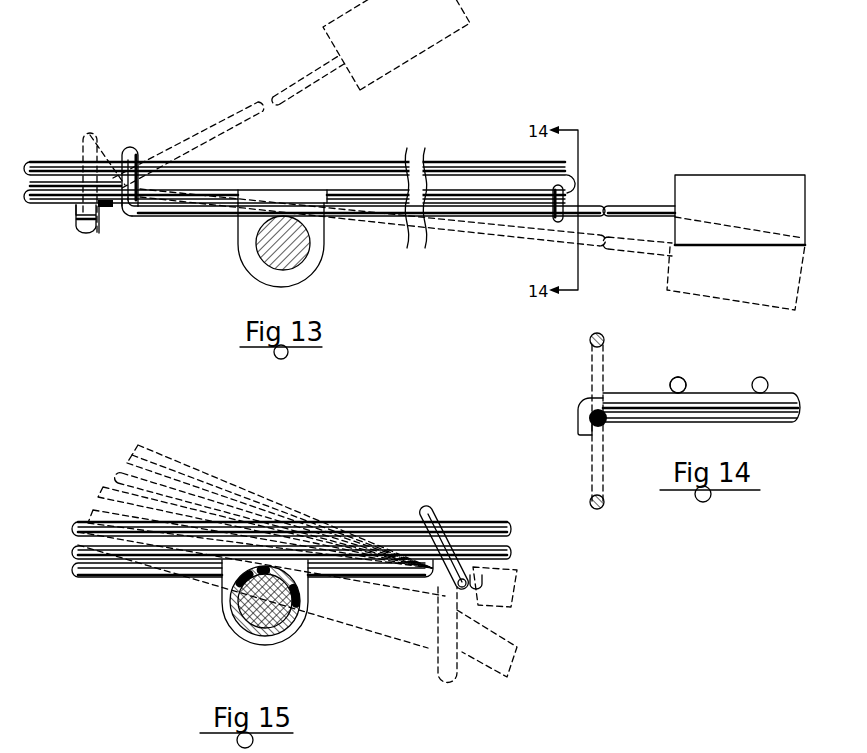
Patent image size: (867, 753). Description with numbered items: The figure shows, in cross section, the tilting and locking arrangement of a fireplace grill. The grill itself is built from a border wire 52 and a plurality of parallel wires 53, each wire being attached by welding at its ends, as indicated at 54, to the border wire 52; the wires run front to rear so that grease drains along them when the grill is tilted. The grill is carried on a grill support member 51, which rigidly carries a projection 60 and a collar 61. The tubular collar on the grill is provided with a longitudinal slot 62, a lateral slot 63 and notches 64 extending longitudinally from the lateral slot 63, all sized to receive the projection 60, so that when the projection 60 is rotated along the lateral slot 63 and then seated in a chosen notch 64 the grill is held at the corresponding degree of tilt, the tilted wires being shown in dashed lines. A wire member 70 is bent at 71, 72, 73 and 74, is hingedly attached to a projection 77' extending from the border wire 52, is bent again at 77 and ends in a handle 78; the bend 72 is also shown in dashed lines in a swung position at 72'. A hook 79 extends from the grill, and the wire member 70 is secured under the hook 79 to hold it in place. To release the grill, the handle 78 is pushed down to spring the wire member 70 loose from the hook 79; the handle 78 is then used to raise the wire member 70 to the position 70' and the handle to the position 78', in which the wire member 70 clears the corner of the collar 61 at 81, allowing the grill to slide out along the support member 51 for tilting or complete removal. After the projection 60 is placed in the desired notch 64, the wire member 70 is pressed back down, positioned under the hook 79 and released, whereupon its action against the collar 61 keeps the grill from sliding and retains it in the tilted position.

In FIG. 13, the grill support member 51 is at (309, 250).
In FIG. 15, the grill support member 51 is at (237, 618).
In FIG. 13, the border wire 52 is at (294, 173).
In FIG. 14, the border wire 52 is at (703, 396).
In FIG. 15, the border wire 52 is at (291, 528).
In FIG. 13, the parallel wires 53 is at (299, 168).
In FIG. 14, the parallel wires 53 is at (719, 382).
In FIG. 15, the parallel wires 53 is at (291, 517).
In FIG. 14, the weld 54 is at (671, 389).
In FIG. 15, the projection 60 is at (266, 568).
In FIG. 13, the collar 61 is at (240, 254).
In FIG. 15, the collar 61 is at (236, 637).
In FIG. 15, the longitudinal slot 62 is at (290, 575).
In FIG. 15, the lateral slot 63 is at (236, 590).
In FIG. 15, the notches 64 is at (244, 572).
In FIG. 13, the wire member 70 is at (403, 198).
In FIG. 14, the wire member 70 is at (617, 427).
In FIG. 15, the wire member 70 is at (252, 580).
In FIG. 13, the raised position of wire member 70' is at (228, 121).
In FIG. 14, the raised position of wire member 70' is at (577, 418).
In FIG. 15, the raised position of wire member 70' is at (270, 520).
In FIG. 13, the bend 71 is at (131, 214).
In FIG. 13, the bend 72 is at (138, 166).
In FIG. 13, the hook in pivoted position 72' is at (104, 174).
In FIG. 15, the bend 73 is at (427, 510).
In FIG. 15, the bend 74 is at (447, 596).
In FIG. 13, the bend 77 is at (94, 230).
In FIG. 15, the bend 77 is at (489, 588).
In FIG. 13, the projection 77' is at (60, 218).
In FIG. 15, the projection 77' is at (512, 582).
In FIG. 13, the handle 78 is at (740, 198).
In FIG. 13, the raised position of handle 78' is at (396, 45).
In FIG. 13, the hook 79 is at (552, 228).
In FIG. 14, the hook 79 is at (577, 418).
In FIG. 13, the corner of collar 81 is at (238, 189).